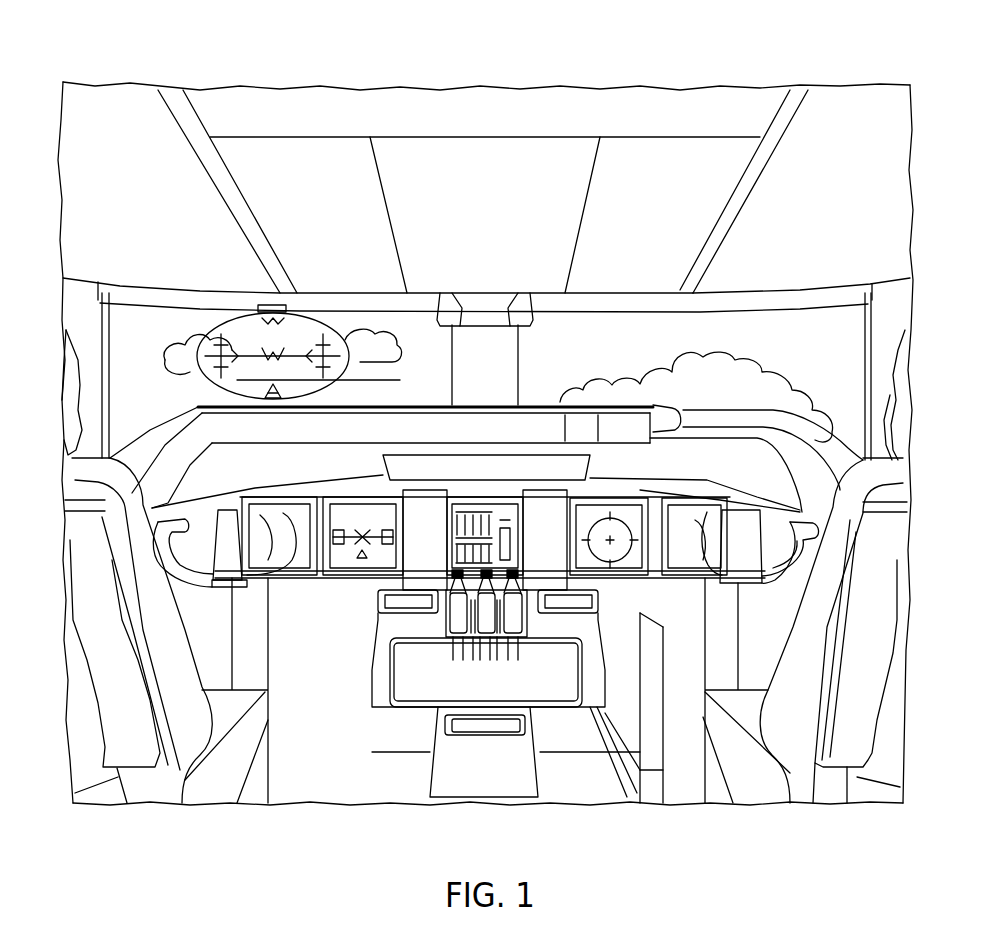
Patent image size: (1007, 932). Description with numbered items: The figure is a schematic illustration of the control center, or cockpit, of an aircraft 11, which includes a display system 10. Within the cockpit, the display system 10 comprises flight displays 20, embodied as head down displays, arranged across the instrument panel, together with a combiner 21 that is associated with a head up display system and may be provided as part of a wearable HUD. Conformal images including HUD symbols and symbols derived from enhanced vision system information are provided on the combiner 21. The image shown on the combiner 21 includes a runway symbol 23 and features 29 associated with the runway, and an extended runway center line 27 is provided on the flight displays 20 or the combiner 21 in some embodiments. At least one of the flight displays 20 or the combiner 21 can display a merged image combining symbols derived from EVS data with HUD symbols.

The display system 10 is at (426, 260).
The aircraft 11 is at (647, 56).
The flight displays 20 is at (281, 499).
The combiner 21 is at (350, 338).
The runway symbol 23 is at (274, 355).
The extended runway center line 27 is at (300, 338).
The features 29 is at (253, 341).